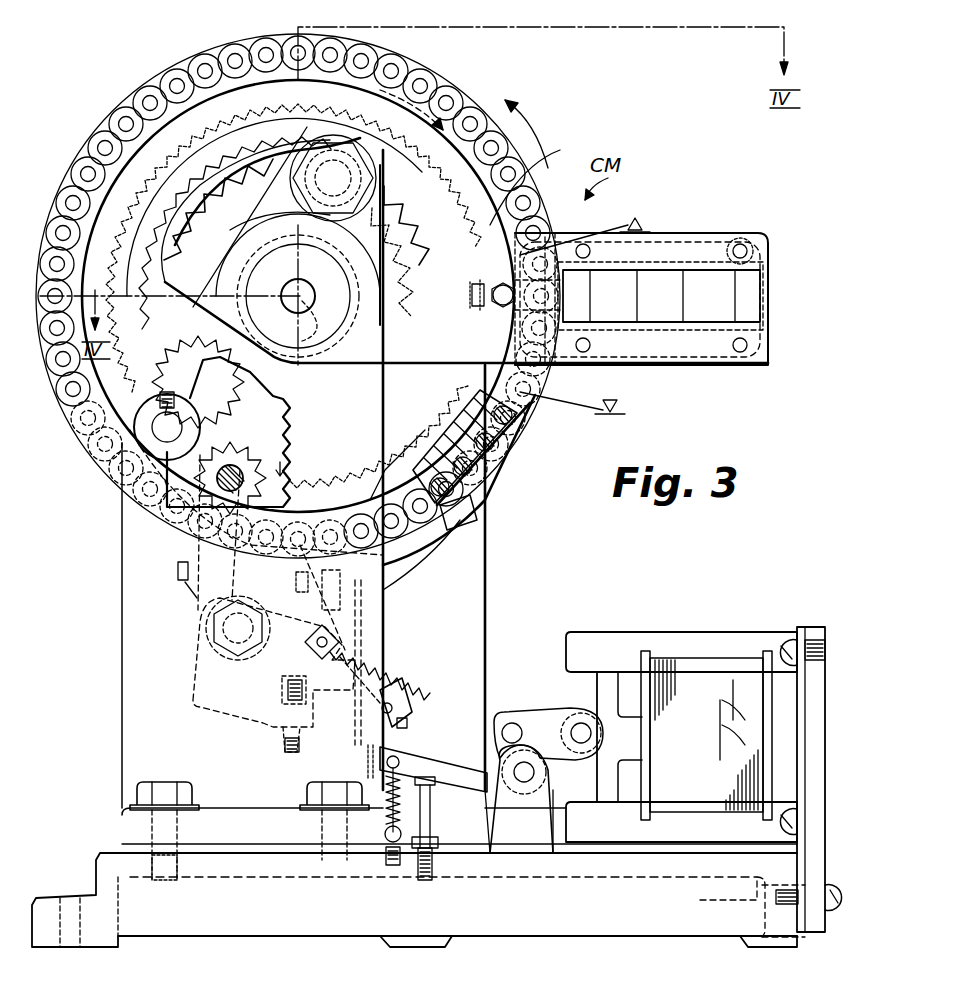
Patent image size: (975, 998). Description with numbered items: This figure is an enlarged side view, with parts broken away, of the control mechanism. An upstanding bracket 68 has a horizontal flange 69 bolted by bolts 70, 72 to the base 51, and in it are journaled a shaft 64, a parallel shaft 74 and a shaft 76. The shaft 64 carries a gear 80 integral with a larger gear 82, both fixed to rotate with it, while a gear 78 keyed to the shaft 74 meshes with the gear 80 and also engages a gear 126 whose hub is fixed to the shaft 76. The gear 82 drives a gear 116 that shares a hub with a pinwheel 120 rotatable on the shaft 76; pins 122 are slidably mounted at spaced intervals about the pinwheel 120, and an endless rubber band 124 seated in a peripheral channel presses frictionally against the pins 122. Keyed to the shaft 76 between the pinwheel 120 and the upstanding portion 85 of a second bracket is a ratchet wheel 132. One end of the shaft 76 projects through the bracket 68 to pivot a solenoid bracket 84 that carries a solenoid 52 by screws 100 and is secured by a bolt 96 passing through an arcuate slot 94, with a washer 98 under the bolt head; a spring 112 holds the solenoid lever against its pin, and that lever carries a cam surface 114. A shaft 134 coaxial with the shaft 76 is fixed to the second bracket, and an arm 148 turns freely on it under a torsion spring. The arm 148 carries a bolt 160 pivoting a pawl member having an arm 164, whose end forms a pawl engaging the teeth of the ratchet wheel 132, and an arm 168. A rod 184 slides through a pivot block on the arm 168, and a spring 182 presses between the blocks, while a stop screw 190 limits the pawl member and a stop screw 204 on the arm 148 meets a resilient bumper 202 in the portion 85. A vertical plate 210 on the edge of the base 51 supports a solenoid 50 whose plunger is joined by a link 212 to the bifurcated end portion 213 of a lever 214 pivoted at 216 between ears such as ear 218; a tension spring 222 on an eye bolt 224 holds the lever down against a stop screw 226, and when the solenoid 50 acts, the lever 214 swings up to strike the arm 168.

The solenoid 50 is at (700, 672).
The base 51 is at (112, 855).
The solenoid 52 is at (680, 240).
The shaft 64 is at (298, 520).
The upstanding bracket 68 is at (140, 633).
The horizontal flange 69 is at (250, 848).
The bolt 70 is at (165, 790).
The bolt 72 is at (340, 790).
The shaft 74 is at (167, 427).
The shaft 76 is at (307, 291).
The gear 78 is at (200, 365).
The gear 80 is at (228, 432).
The gear 82 is at (266, 478).
The solenoid bracket 84 is at (488, 235).
The upstanding portion 85 is at (475, 632).
The arcuate slot 94 is at (150, 172).
The bolt 96 is at (272, 251).
The washer 98 is at (278, 224).
The screws 100 is at (590, 251).
The spring 112 is at (498, 262).
The cam surface 114 is at (516, 284).
The gear 116 is at (397, 465).
The pinwheel 120 is at (464, 122).
The pins 122 is at (392, 76).
The rubber band 124 is at (490, 466).
The gear 126 is at (418, 222).
The ratchet wheel 132 is at (195, 140).
The shaft 134 is at (292, 321).
The arm 148 is at (262, 710).
The bolt 160 is at (233, 634).
The arm 164 is at (430, 540).
The arm 168 is at (337, 690).
The spring 182 is at (366, 658).
The rod 184 is at (408, 704).
The stop screw 190 is at (282, 760).
The resilient bumper 202 is at (345, 592).
The stop screw 204 is at (178, 572).
The vertical plate 210 is at (814, 640).
The link 212 is at (543, 728).
The bifurcated end portion 213 is at (510, 722).
The lever 214 is at (444, 768).
The pivot 216 is at (524, 782).
The ear 218 is at (545, 855).
The tension spring 222 is at (350, 814).
The eye bolt 224 is at (392, 868).
The stop screw 226 is at (431, 806).